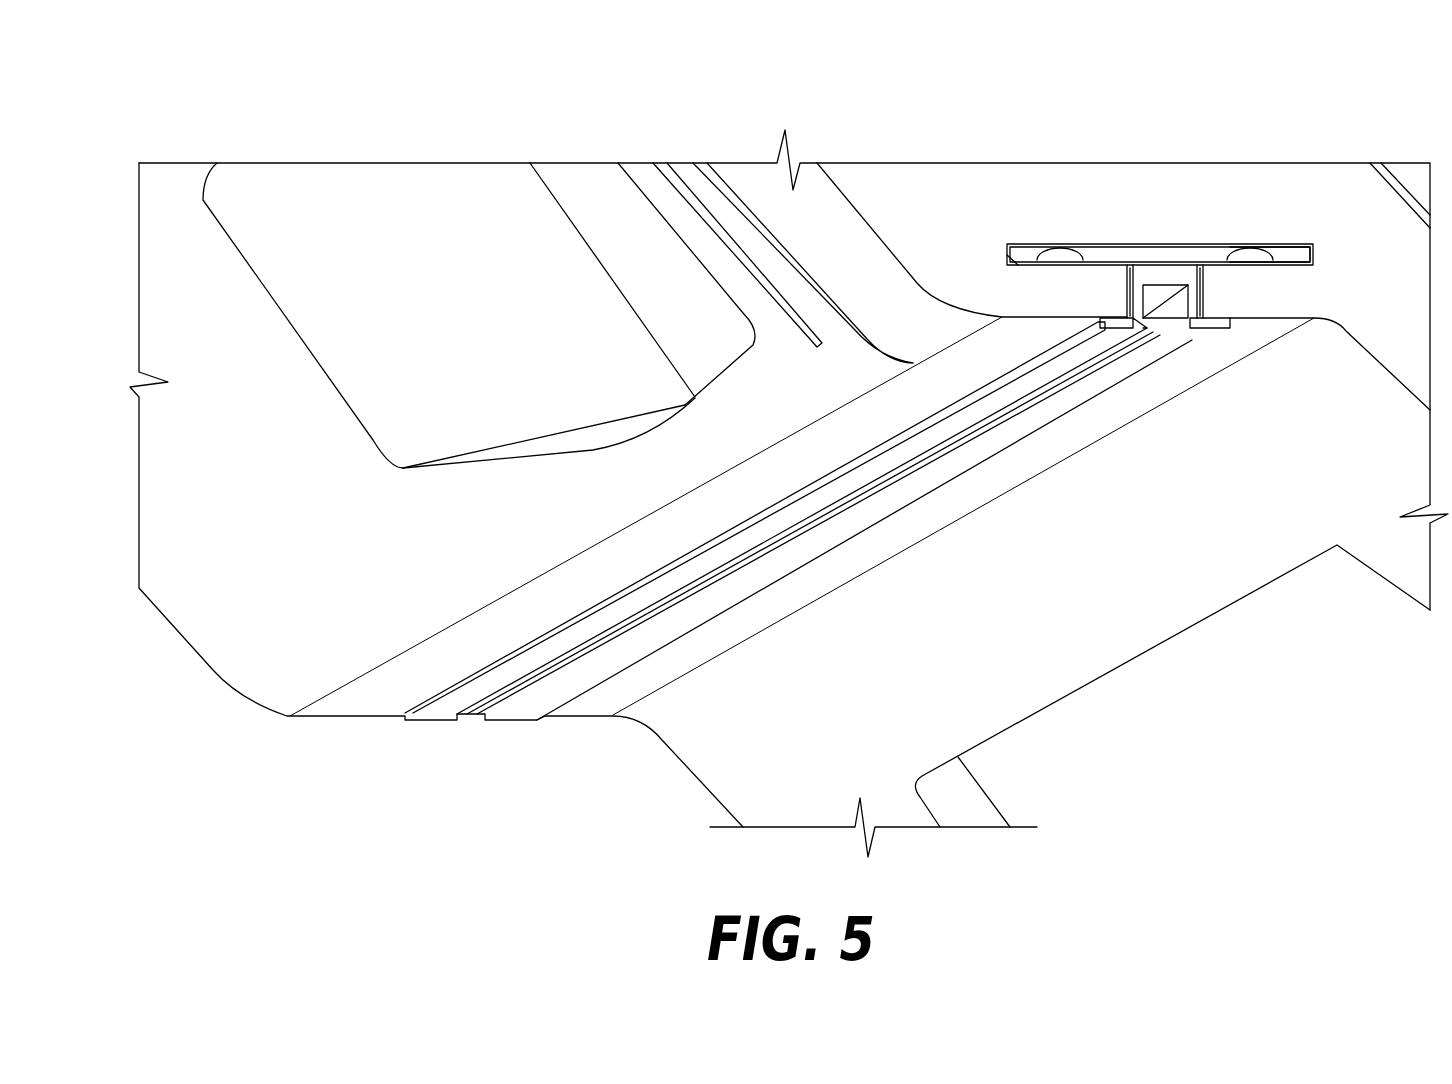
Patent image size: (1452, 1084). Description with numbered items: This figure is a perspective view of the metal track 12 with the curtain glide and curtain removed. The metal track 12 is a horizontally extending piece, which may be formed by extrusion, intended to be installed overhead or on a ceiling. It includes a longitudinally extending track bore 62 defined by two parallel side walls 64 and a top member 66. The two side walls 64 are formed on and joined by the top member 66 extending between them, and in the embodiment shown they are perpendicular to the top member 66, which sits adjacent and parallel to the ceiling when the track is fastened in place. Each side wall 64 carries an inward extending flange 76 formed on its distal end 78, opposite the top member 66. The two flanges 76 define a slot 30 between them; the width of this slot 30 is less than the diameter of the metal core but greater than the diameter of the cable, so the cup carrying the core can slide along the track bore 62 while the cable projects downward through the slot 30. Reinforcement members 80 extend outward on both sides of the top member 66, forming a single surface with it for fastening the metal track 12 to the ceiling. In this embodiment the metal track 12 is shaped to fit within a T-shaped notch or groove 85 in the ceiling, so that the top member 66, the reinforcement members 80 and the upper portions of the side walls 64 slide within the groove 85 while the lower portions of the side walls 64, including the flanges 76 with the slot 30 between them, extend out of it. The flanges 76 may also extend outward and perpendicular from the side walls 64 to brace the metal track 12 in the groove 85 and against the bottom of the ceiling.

The metal track 12 is at (1231, 140).
The slot 30 is at (1165, 327).
The track bore 62 is at (1178, 298).
The side walls 64 is at (1143, 307).
The top member 66 is at (1165, 273).
The inward extending flange 76 is at (1188, 328).
The distal end 78 is at (1197, 313).
The reinforcement member 80 is at (1257, 260).
The T-shaped notch or groove 85 is at (1128, 268).